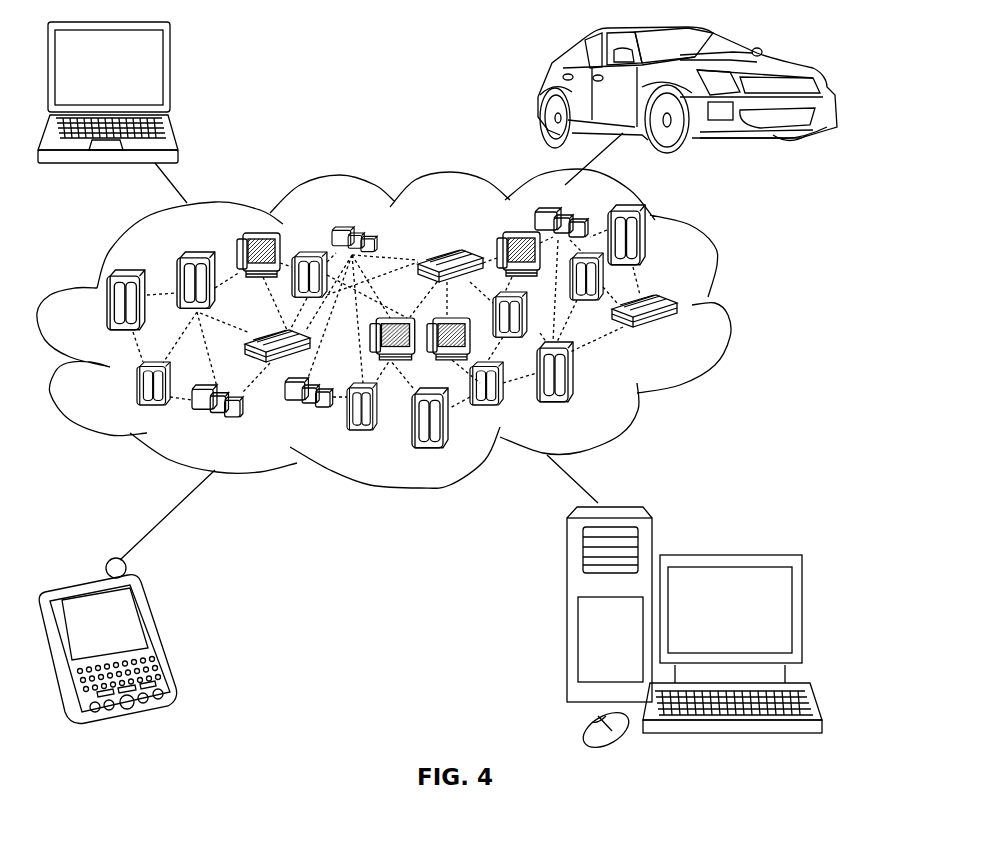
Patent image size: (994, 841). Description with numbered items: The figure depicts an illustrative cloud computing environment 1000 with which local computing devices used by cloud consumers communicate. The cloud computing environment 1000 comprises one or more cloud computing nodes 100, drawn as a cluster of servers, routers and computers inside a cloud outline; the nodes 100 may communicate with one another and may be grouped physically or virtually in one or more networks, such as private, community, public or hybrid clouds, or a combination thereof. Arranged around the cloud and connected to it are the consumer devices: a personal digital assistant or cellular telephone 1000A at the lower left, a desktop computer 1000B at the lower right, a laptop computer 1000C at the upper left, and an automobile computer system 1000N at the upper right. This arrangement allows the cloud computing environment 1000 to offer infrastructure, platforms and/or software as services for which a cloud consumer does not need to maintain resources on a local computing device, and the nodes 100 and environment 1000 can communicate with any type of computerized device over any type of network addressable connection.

The laptop computer 1000C is at (172, 76).
The automobile computer system 1000N is at (540, 90).
The personal digital assistant (PDA) or cellular telephone 1000A is at (158, 636).
The desktop computer 1000B is at (738, 535).
The cloud computing environment 1000 is at (730, 308).
The cloud computing nodes 100 is at (678, 333).